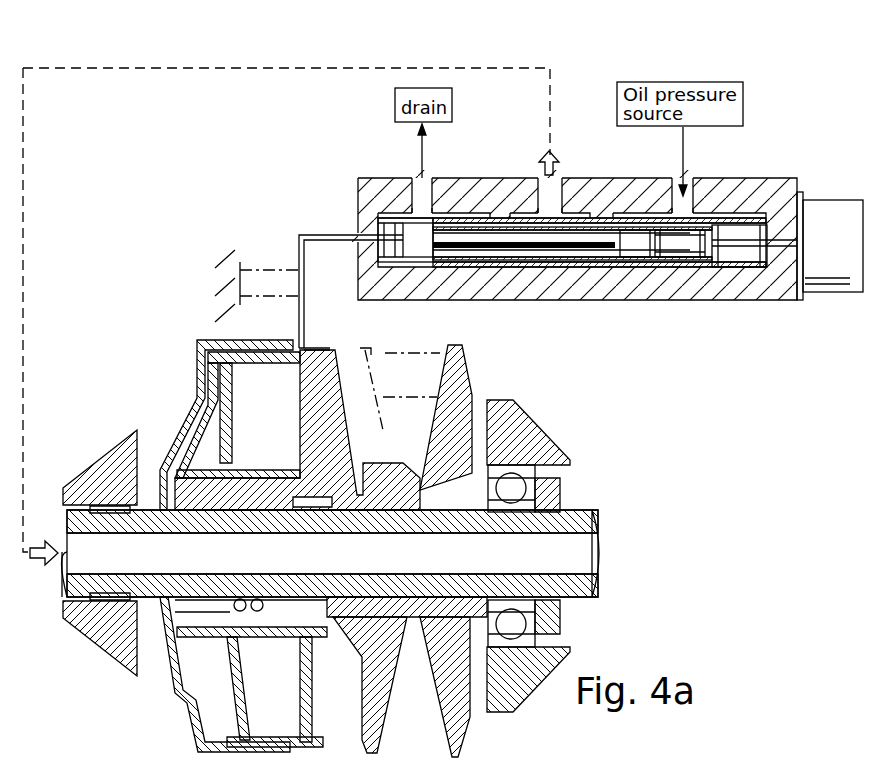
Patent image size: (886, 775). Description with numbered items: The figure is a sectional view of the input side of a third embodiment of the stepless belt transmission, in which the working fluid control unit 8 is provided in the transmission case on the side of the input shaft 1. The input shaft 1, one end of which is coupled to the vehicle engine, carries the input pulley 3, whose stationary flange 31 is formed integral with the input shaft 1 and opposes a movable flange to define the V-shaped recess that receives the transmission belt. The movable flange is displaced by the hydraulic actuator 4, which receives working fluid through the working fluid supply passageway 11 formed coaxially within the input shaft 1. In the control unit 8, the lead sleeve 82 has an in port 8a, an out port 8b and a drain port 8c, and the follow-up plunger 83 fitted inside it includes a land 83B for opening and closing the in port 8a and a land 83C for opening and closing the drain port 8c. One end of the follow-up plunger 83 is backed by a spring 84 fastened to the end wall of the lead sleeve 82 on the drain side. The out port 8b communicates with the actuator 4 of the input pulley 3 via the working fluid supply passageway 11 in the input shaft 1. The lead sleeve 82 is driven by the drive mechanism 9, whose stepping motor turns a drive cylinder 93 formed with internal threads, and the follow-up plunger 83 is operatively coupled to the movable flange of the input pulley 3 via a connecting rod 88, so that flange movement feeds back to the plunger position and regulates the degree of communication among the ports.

The input shaft 1 is at (600, 530).
The input pulley 3 is at (470, 370).
The actuator 4 is at (184, 371).
The working fluid control unit 8 is at (668, 280).
The in port 8a is at (660, 212).
The out port 8b is at (522, 212).
The drain port 8c is at (428, 212).
The drive mechanism 9 is at (833, 295).
The working fluid supply passageway 11 is at (80, 572).
The stationary flange 31 is at (447, 362).
The lead sleeve 82 is at (570, 262).
The follow-up plunger 83 is at (590, 222).
The land 83B is at (640, 262).
The land 83C is at (410, 262).
The spring 84 is at (732, 222).
The connecting rod 88 is at (300, 232).
The drive cylinder 93 is at (742, 248).